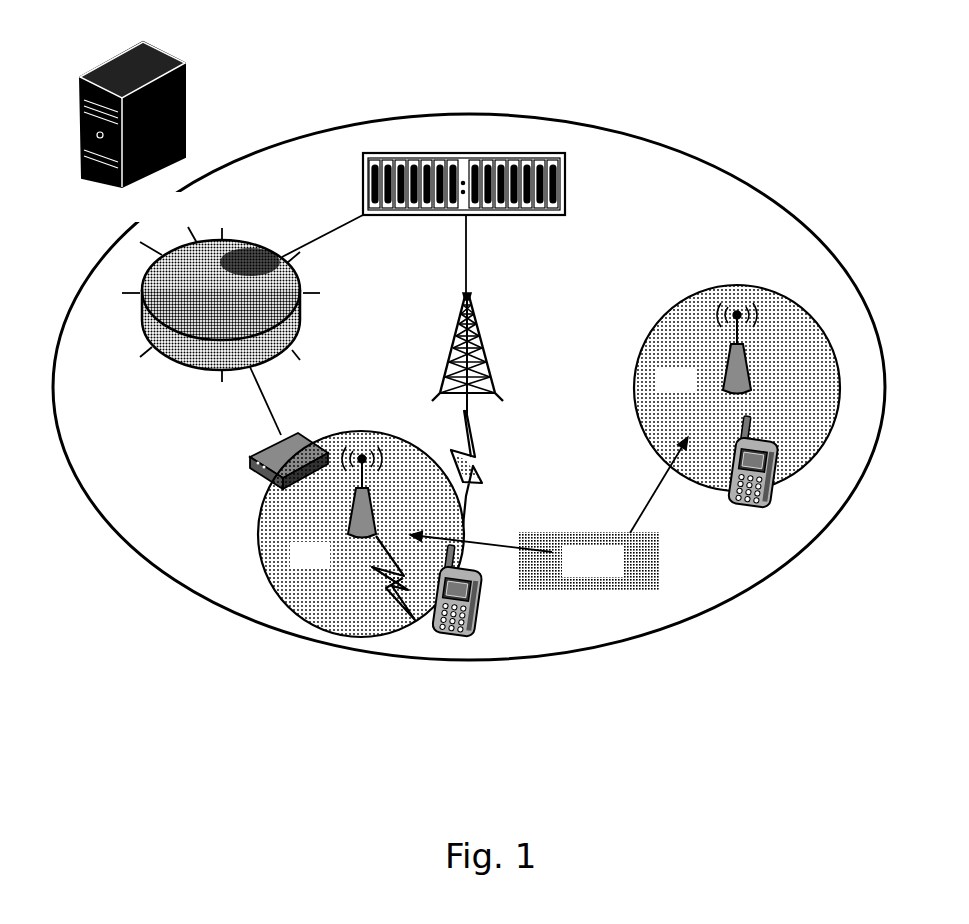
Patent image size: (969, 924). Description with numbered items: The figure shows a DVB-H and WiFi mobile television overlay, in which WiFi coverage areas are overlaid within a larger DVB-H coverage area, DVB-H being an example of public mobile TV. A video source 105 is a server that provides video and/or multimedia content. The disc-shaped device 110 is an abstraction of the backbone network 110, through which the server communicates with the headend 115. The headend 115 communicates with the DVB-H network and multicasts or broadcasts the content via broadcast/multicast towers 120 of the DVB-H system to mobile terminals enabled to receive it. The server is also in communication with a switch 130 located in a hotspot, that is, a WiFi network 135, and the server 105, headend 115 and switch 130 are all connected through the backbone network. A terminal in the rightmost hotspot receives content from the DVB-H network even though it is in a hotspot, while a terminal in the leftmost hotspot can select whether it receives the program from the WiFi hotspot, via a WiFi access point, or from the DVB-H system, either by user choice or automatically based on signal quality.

The video source 105 is at (122, 55).
The backbone network 110 is at (197, 373).
The headend 115 is at (567, 183).
The broadcast/multicast tower 120 is at (488, 366).
The switch 130 is at (267, 475).
The WiFi network 135 is at (573, 588).